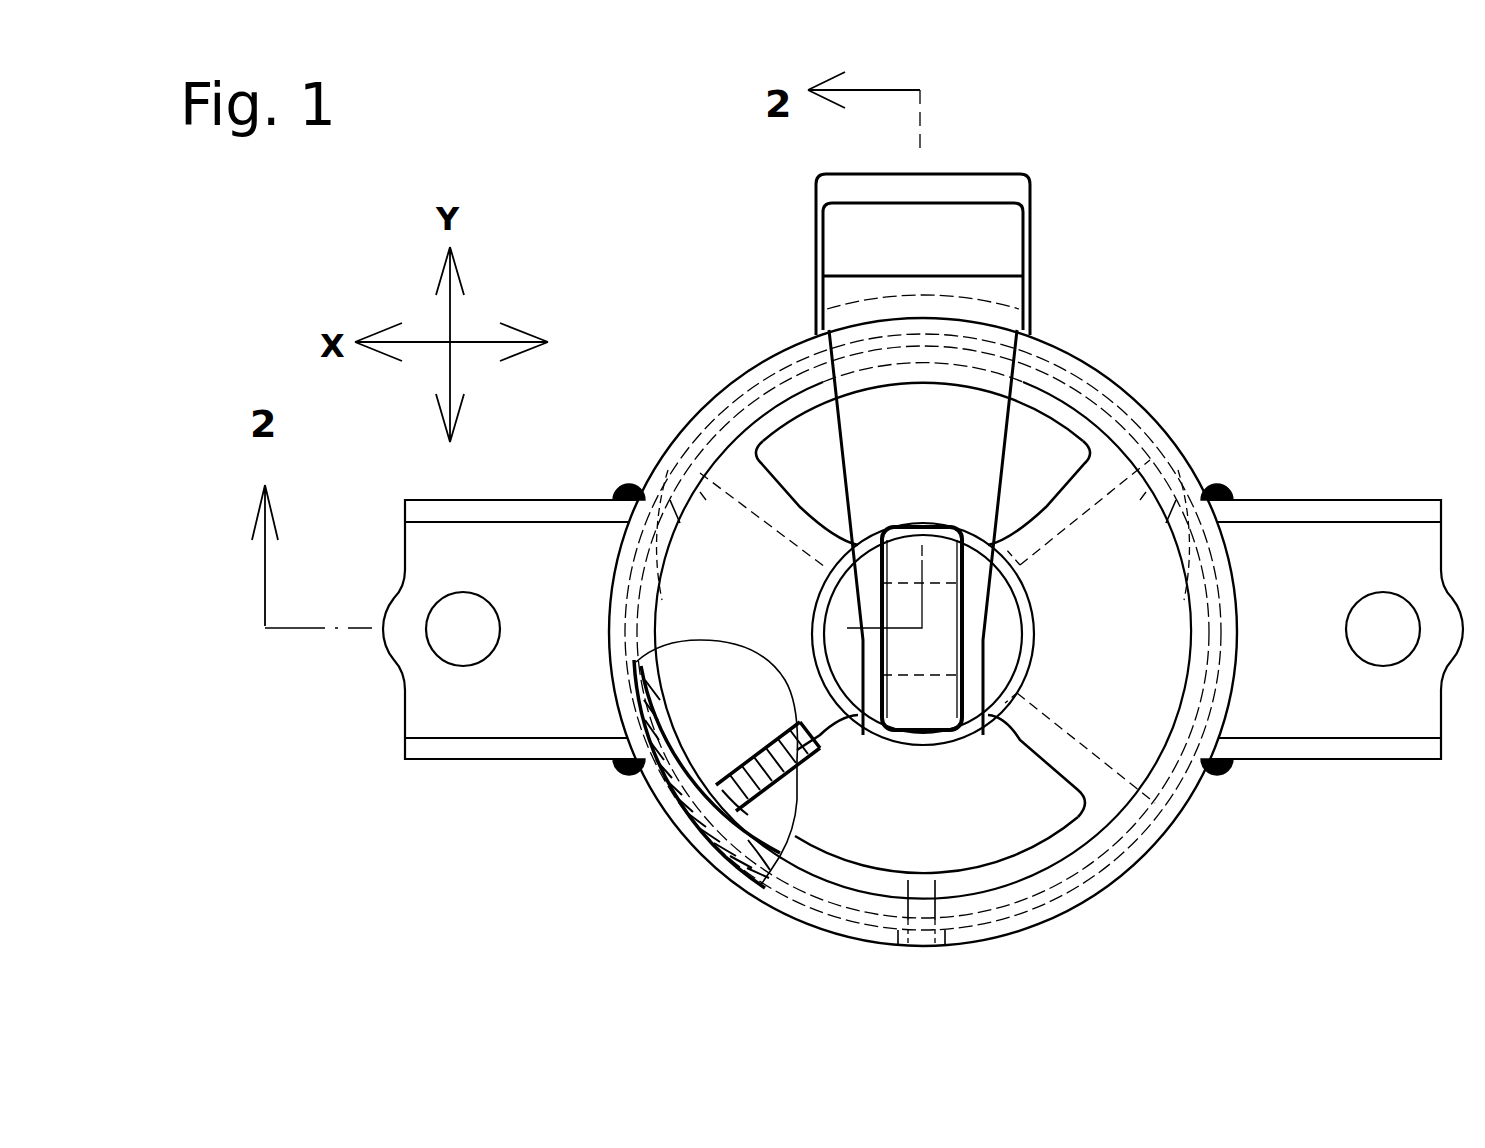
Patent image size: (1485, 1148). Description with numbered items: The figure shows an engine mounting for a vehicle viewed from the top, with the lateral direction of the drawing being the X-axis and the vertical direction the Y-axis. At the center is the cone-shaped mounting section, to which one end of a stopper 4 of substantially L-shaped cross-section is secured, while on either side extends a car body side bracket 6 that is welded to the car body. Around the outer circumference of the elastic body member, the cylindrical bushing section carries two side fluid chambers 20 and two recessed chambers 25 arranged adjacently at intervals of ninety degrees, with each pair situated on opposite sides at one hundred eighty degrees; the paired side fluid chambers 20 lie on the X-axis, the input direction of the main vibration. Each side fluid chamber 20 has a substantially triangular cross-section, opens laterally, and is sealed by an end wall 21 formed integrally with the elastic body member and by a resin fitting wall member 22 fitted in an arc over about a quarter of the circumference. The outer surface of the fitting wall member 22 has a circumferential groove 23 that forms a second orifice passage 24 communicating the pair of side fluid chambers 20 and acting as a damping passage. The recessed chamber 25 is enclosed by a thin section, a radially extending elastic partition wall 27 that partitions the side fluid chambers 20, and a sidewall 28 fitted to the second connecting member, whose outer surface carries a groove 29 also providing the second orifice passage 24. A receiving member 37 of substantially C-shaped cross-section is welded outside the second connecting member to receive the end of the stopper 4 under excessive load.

The stopper 4 is at (960, 412).
The car body side bracket 6 is at (510, 542).
The side fluid chamber 20 is at (718, 647).
The end wall 21 is at (705, 502).
The fitting wall member 22 is at (672, 680).
The groove 23 is at (635, 700).
The second orifice passage 24 is at (676, 790).
The recessed chamber 25 is at (1065, 457).
The elastic partition wall 27 is at (760, 492).
The sidewall 28 is at (740, 865).
The groove 29 is at (762, 885).
The receiving member 37 is at (1000, 190).